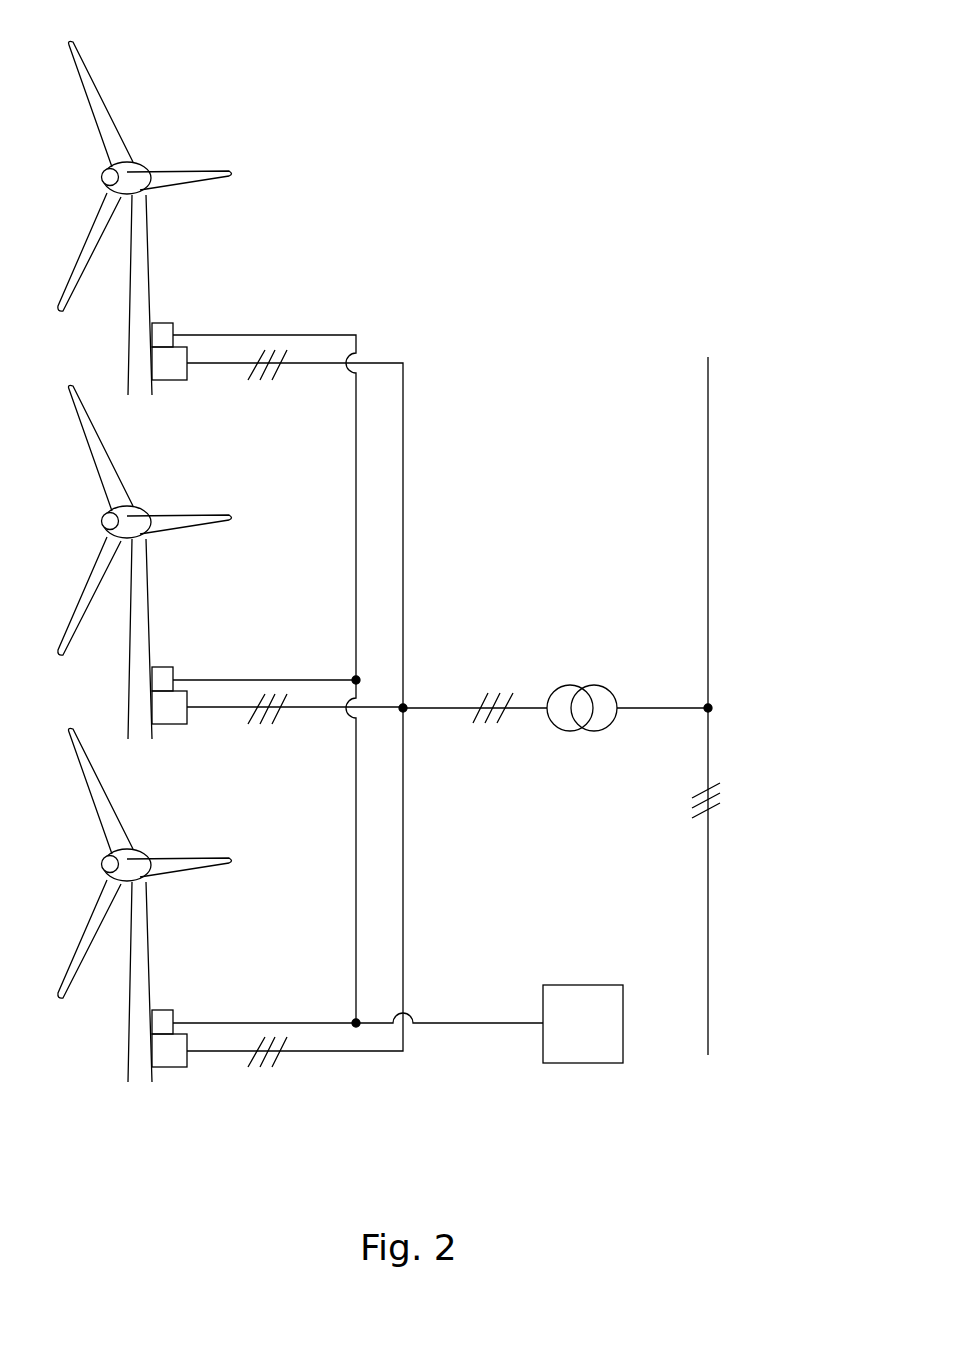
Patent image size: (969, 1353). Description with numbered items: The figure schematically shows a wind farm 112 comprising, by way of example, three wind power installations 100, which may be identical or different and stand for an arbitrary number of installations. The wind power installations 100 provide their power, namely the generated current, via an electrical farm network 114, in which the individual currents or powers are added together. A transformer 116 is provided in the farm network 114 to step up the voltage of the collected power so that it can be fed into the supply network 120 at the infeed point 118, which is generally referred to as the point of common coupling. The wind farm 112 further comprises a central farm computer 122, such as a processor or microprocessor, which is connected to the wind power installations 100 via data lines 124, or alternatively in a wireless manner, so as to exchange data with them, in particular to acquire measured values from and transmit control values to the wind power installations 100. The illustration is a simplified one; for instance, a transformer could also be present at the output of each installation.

The wind power installation 100 is at (137, 287).
The wind farm 112 is at (534, 214).
The electrical farm network 114 is at (430, 707).
The transformer 116 is at (592, 662).
The infeed point 118 is at (726, 682).
The supply network 120 is at (708, 433).
The central farm computer 122 is at (575, 985).
The data lines 124 is at (356, 852).